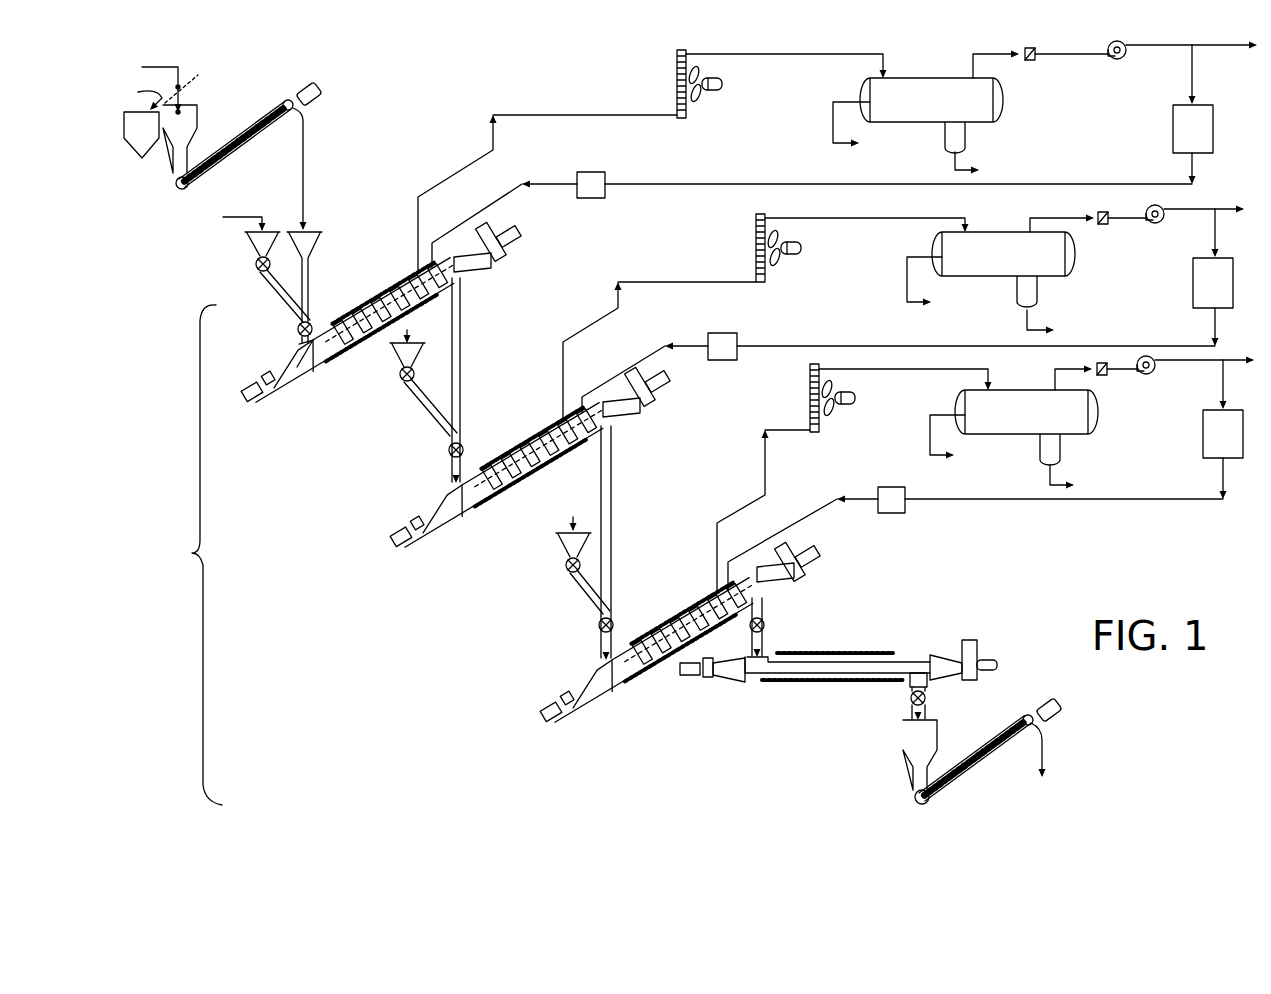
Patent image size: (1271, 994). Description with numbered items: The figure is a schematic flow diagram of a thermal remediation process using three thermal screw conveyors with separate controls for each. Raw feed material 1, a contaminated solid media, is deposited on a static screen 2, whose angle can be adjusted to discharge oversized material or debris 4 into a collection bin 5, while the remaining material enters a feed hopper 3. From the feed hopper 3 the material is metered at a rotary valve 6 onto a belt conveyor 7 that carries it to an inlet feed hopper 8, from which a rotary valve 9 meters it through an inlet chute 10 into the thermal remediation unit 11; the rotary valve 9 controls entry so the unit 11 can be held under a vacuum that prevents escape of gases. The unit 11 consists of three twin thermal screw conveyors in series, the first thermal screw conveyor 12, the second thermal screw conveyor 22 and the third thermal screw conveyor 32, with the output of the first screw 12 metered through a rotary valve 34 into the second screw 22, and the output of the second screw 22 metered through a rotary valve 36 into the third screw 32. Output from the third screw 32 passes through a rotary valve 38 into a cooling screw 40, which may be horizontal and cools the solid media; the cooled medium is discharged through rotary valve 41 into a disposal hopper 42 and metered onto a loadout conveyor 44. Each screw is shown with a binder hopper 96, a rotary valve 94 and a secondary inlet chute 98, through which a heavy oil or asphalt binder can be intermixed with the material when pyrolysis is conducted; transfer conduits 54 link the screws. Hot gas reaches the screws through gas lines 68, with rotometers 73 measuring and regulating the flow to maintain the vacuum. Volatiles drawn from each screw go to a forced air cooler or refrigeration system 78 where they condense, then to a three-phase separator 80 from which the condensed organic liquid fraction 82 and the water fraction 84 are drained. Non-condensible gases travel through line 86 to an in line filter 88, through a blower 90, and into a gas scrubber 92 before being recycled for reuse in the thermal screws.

The raw feed material 1 is at (167, 67).
The static screen 2 is at (198, 76).
The feed hopper 3 is at (197, 128).
The oversized material or debris 4 is at (140, 91).
The collection bin 5 is at (134, 142).
The rotary valve 6 is at (175, 175).
The belt conveyor 7 is at (262, 115).
The inlet feed hopper 8 is at (323, 236).
The rotary valve 9 is at (312, 326).
The inlet chute 10 is at (300, 343).
The thermal remediation unit 11 is at (191, 555).
The first thermal screw conveyor 12 is at (393, 276).
The second thermal screw conveyor 22 is at (525, 440).
The third thermal screw conveyor 32 is at (700, 606).
The rotary valve 34 is at (448, 450).
The rotary valve 36 is at (599, 630).
The rotary valve 38 is at (766, 628).
The cooling screw 40 is at (858, 662).
The rotary valve 41 is at (926, 700).
The disposal hopper 42 is at (903, 740).
The loadout conveyor 44 is at (980, 766).
The transfer conduit 54 is at (463, 364).
The gas lines 68 is at (728, 184).
The rotometers 73 is at (591, 172).
The forced air cooler or refrigeration system 78 is at (677, 80).
The three-phase separator 80 is at (915, 114).
The condensed organic liquid fraction 82 is at (913, 286).
The water fraction 84 is at (1031, 326).
The line 86 is at (973, 66).
The in line filter 88 is at (1030, 61).
The blower 90 is at (1117, 60).
The gas scrubber 92 is at (1179, 140).
The rotary valve 94 is at (256, 269).
The binder hopper 96 is at (248, 238).
The secondary inlet chute 98 is at (276, 298).